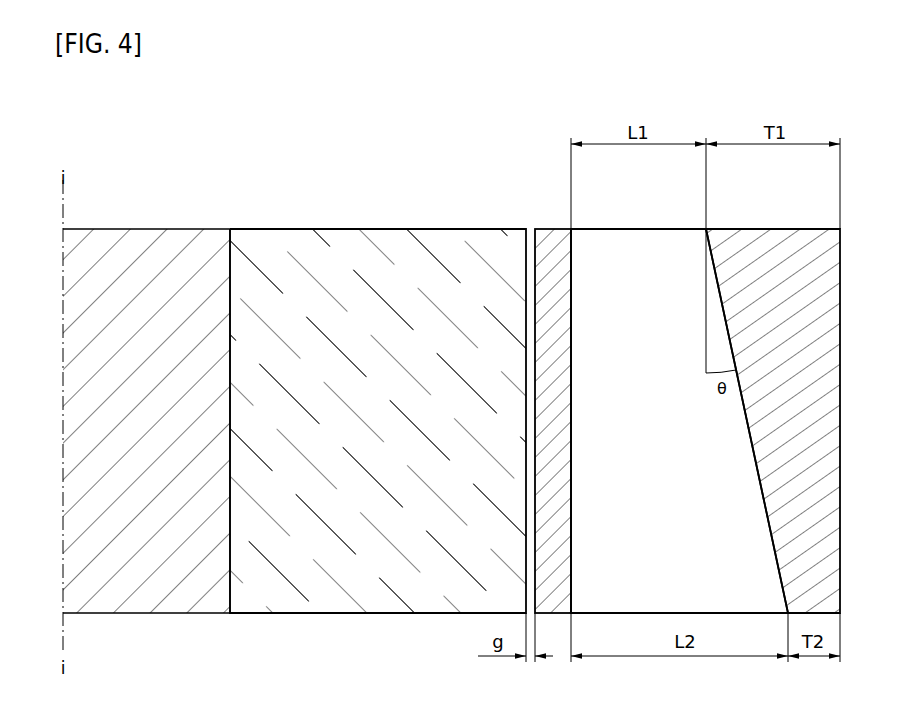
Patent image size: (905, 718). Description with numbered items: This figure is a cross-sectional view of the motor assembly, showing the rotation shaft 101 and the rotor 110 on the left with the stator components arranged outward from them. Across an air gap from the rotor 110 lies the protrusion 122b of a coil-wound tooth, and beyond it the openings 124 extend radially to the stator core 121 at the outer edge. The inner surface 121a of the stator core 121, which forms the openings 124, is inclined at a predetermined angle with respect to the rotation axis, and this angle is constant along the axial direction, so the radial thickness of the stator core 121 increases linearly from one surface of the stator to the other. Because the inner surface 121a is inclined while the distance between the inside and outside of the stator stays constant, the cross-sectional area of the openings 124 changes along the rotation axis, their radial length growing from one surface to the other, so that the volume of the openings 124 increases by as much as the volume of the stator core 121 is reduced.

The rotation shaft 101 is at (147, 240).
The rotor 110 is at (377, 240).
The protrusion 122b is at (552, 238).
The openings 124 is at (640, 248).
The stator core 121 is at (811, 244).
The inner surface 121a is at (722, 299).